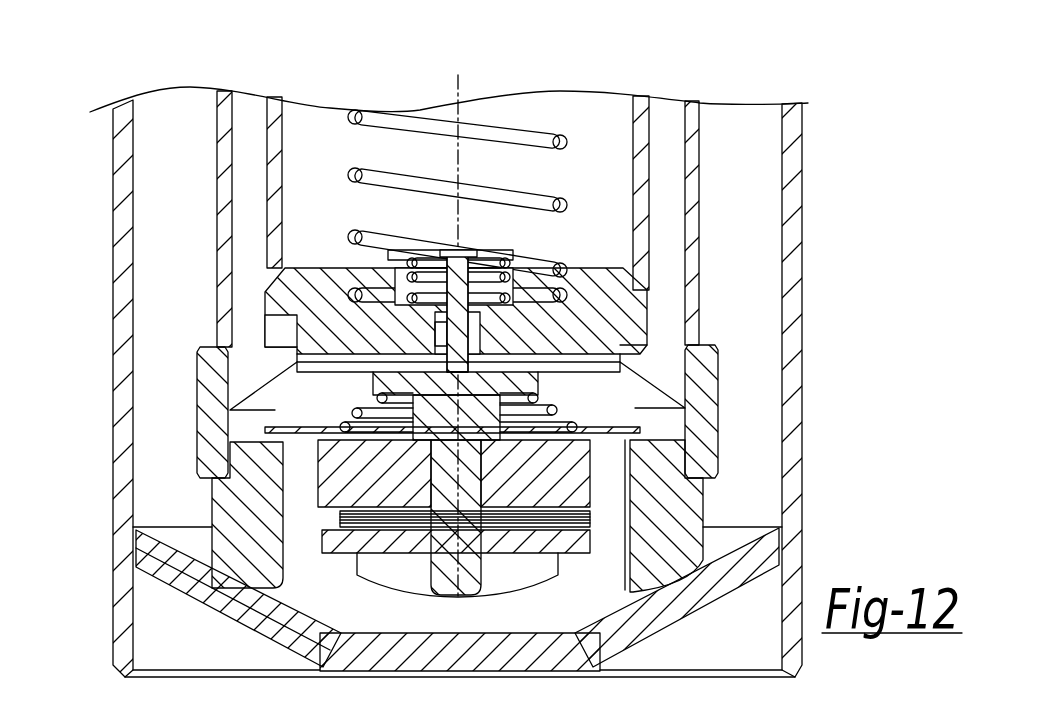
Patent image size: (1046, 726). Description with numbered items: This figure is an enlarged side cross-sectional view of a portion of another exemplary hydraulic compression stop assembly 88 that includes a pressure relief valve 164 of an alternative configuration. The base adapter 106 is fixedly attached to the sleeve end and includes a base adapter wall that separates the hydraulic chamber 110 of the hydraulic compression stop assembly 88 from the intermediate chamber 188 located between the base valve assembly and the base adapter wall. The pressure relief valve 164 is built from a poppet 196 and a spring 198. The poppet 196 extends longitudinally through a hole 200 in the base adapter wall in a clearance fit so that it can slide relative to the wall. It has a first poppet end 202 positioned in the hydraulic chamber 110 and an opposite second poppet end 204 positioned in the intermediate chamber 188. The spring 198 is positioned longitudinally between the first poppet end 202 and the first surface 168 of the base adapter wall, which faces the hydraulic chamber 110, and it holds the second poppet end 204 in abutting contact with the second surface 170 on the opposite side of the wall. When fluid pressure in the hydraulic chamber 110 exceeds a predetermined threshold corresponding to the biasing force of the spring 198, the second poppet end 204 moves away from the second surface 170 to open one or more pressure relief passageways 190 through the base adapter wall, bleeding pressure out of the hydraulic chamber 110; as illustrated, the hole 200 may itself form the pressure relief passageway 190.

The hydraulic chamber 110 is at (297, 112).
The hydraulic compression stop assembly 88 is at (656, 226).
The base adapter 106 is at (722, 437).
The poppet 196 is at (462, 86).
The first surface 168 is at (311, 262).
The hole 200 is at (480, 337).
The pressure relief passageway 190 is at (446, 334).
The first poppet end 202 is at (516, 250).
The spring 198 is at (401, 250).
The pressure relief valve 164 is at (368, 369).
The second poppet end 204 is at (479, 374).
The second surface 170 is at (598, 405).
The intermediate chamber 188 is at (256, 428).